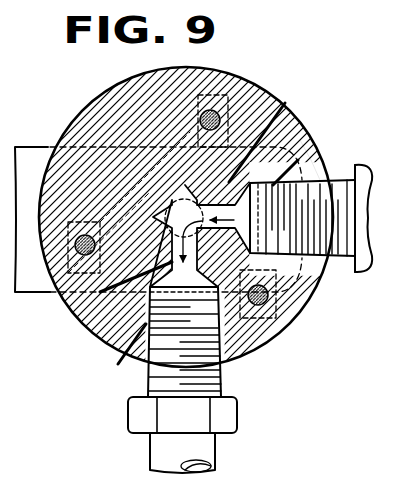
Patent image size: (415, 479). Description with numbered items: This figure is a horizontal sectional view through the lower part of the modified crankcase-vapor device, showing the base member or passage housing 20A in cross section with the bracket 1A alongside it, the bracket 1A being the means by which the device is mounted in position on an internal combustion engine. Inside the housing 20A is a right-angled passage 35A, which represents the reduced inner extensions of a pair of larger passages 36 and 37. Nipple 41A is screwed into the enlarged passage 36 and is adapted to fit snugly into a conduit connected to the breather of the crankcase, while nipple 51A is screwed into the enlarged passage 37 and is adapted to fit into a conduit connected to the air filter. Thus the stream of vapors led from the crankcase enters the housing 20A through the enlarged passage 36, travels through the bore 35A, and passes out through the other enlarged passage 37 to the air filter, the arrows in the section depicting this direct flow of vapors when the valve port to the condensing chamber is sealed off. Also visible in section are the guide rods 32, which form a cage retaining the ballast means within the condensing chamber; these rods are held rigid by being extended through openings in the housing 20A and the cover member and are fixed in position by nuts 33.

The bracket 1A is at (35, 152).
The housing 20A is at (145, 88).
The guide rods 32 is at (222, 108).
The nuts 33 is at (200, 83).
The right-angled passage 35A is at (284, 104).
The enlarged passage 36 is at (305, 145).
The enlarged passage 37 is at (122, 346).
The nipple 41A is at (323, 262).
The nipple 51A is at (162, 447).